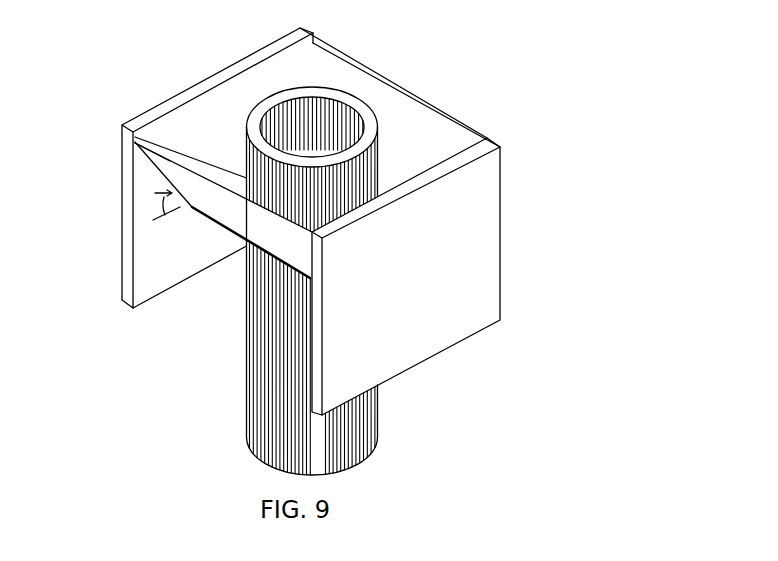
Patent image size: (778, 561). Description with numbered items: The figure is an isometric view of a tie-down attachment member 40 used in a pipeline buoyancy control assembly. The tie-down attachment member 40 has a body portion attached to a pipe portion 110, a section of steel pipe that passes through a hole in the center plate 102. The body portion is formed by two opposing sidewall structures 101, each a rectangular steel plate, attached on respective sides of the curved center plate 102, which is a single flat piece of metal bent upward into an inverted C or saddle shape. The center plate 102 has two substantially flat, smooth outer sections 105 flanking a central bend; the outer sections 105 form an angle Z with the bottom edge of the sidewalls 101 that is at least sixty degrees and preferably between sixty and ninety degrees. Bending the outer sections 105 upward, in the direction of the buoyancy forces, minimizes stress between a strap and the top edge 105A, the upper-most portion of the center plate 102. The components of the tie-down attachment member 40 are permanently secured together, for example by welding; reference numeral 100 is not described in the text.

The tie-down attachment member 40 is at (552, 312).
The bracket 100 is at (530, 120).
The sidewall structures 101 is at (467, 227).
The center plate 102 is at (325, 45).
The outer sections 105 is at (203, 197).
The top edge of center plate 105A is at (167, 157).
The pipe portion 110 is at (325, 90).